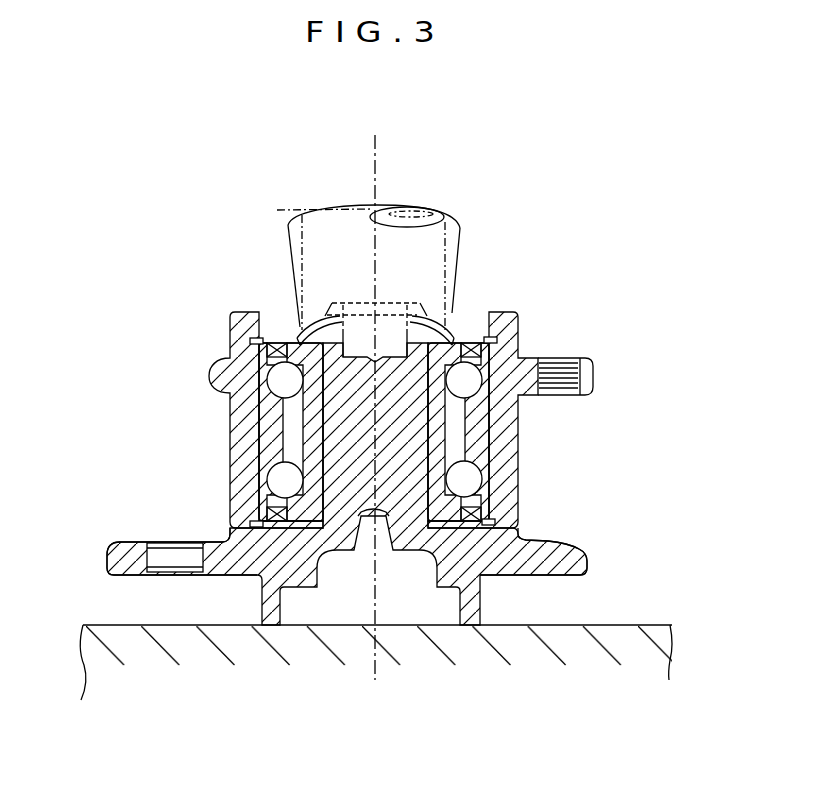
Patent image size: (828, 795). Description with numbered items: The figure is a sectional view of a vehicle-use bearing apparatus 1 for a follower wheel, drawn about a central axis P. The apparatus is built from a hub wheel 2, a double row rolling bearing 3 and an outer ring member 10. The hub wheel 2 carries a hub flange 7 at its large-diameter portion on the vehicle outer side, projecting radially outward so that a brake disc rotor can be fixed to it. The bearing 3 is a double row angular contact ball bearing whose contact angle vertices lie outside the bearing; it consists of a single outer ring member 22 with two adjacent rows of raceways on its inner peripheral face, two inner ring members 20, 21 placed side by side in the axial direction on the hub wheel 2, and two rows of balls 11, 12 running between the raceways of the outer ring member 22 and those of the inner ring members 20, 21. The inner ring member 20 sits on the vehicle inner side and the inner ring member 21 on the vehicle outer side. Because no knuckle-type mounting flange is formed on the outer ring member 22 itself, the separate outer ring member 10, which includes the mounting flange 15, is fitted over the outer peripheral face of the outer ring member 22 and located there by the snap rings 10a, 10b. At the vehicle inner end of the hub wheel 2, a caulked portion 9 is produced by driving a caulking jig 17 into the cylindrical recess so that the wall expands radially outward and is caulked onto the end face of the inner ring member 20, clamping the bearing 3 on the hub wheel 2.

The vehicle-use bearing apparatus 1 is at (591, 336).
The hub wheel 2 is at (432, 418).
The double row rolling bearing 3 is at (493, 354).
The hub flange 7 is at (580, 553).
The caulked portion 9 is at (320, 335).
The outer ring member 10 is at (510, 422).
The locating snap ring 10a is at (498, 341).
The locating snap ring 10b is at (494, 512).
The balls 11 is at (280, 373).
The balls 12 is at (276, 482).
The mounting flange 15 is at (596, 373).
The caulking jig 17 is at (440, 222).
The inner ring member 20 is at (468, 330).
The inner ring member 21 is at (450, 512).
The outer ring member 22 is at (268, 417).
The axis P is at (376, 168).